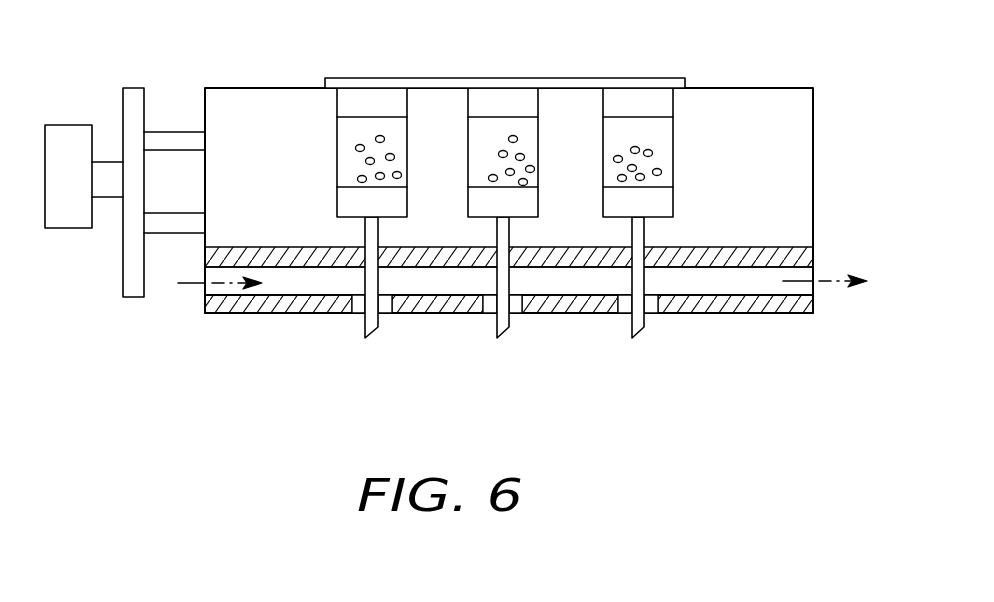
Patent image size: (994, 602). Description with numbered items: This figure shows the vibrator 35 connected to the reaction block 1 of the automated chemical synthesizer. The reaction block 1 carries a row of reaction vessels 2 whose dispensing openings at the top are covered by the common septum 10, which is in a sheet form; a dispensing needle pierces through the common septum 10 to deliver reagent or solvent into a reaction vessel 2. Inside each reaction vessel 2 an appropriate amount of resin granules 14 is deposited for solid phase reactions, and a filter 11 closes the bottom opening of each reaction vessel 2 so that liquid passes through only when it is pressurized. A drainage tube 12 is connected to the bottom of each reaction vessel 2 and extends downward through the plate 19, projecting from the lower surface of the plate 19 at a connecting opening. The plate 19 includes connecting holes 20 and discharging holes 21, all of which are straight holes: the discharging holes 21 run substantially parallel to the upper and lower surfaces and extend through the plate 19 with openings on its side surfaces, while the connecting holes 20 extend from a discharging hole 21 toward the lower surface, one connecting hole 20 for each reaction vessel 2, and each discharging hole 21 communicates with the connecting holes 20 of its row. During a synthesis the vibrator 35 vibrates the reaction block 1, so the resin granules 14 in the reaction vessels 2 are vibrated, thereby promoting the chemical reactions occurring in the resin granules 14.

The reaction block 1 is at (818, 161).
The reaction vessels 2 is at (337, 162).
The common septum 10 is at (640, 80).
The filter 11 is at (665, 185).
The drainage tube 12 is at (363, 292).
The resin granules 14 is at (670, 128).
The plate 19 is at (775, 327).
The connecting holes 20 is at (652, 300).
The discharging holes 21 is at (443, 285).
The vibrator 35 is at (70, 124).